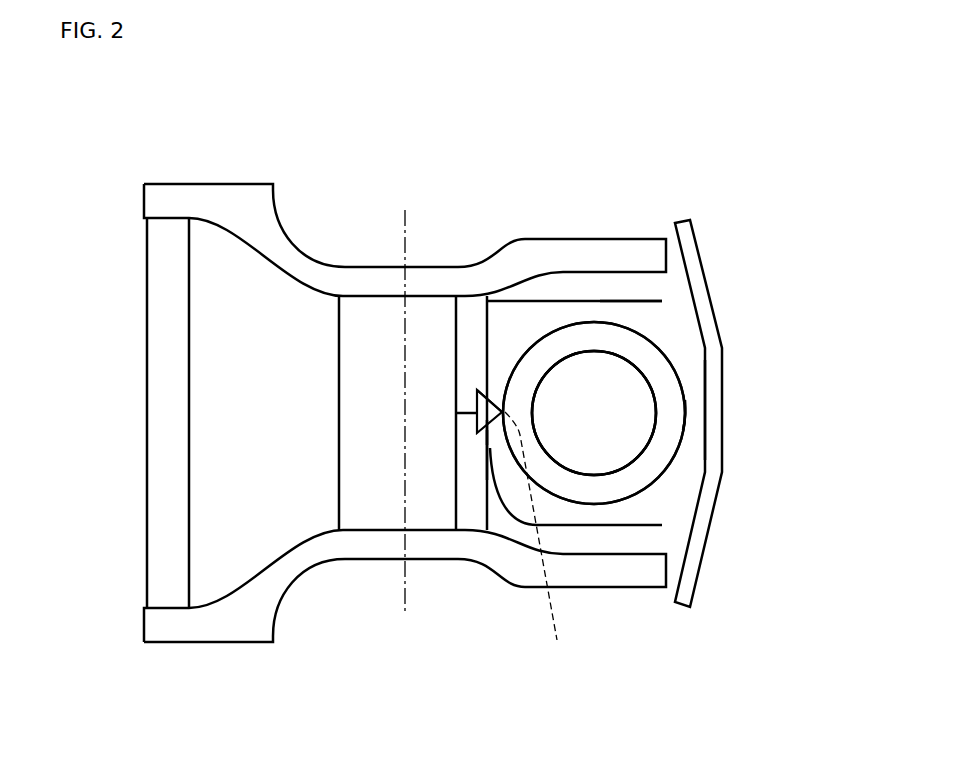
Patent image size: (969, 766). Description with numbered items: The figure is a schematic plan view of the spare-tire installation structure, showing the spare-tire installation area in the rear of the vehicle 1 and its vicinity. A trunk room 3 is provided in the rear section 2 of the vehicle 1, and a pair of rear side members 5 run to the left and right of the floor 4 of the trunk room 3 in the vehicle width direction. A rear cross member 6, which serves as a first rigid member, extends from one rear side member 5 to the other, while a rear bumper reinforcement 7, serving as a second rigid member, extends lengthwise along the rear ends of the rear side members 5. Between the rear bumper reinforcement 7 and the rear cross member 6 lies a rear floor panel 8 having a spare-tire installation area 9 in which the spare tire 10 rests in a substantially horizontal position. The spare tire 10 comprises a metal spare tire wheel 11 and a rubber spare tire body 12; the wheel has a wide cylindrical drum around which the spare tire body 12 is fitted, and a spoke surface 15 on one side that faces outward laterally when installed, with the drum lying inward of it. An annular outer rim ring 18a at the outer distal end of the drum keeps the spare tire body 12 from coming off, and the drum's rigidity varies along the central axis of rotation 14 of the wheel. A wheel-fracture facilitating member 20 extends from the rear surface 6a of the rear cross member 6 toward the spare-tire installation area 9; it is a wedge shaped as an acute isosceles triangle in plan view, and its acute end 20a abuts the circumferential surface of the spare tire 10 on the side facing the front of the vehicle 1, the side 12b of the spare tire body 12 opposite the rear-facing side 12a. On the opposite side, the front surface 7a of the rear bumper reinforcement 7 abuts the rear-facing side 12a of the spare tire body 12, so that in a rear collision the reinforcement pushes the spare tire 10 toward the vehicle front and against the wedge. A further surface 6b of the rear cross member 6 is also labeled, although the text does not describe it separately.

The vehicle 1 is at (282, 162).
The rear section 2 is at (595, 205).
The trunk room 3 is at (589, 294).
The floor 4 is at (615, 540).
The rear side members 5 is at (633, 238).
The rear cross member 6 is at (489, 448).
The rear surface 6a is at (490, 450).
The plate surface 6b is at (483, 437).
The rear bumper reinforcement 7 is at (722, 500).
The front surface 7a is at (707, 388).
The rear floor panel 8 is at (638, 297).
The spare-tire installation area 9 is at (653, 320).
The spare tire 10 is at (802, 277).
The spare tire wheel 11 is at (633, 380).
The spare tire body 12 is at (677, 367).
The side facing the rear of the vehicle 12a is at (687, 411).
The outer ring end face 12b is at (498, 408).
The central axis of rotation 14 is at (405, 604).
The spoke surface 15 is at (788, 452).
The outer rim ring 18a is at (545, 372).
The wheel-fracture facilitating member 20 is at (493, 397).
The acute end 20a is at (546, 539).